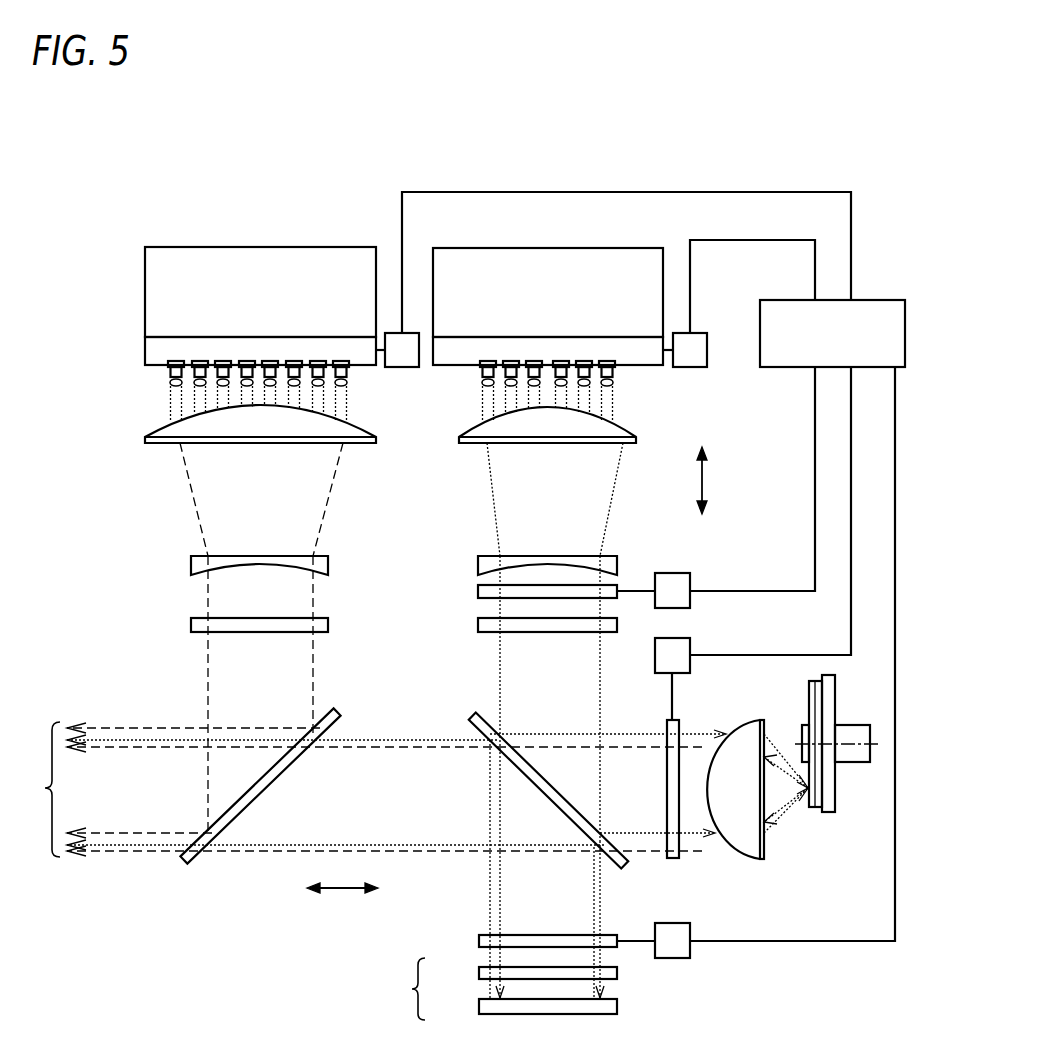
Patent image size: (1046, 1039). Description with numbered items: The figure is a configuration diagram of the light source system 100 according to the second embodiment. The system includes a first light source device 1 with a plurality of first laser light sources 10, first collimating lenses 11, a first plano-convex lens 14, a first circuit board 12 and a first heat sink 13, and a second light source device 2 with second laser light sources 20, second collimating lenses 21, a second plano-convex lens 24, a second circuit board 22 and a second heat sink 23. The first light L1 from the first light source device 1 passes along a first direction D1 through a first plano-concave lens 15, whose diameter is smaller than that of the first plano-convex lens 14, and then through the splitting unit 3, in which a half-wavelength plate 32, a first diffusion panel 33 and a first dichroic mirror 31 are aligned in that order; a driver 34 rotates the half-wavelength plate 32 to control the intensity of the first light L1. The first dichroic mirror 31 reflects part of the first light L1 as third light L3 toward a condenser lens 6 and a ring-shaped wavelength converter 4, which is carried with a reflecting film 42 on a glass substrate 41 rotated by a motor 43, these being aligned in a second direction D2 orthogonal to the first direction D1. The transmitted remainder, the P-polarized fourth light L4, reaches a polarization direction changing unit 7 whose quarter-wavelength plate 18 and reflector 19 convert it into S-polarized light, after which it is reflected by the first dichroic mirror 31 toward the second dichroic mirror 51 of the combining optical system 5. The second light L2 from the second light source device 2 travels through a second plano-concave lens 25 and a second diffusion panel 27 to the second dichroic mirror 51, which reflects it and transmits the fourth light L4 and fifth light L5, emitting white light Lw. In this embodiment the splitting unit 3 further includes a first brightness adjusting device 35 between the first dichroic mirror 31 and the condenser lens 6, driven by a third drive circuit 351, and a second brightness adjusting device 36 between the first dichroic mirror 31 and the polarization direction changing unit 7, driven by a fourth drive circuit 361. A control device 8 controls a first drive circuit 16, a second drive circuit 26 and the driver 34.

The light source system 100 is at (277, 136).
The first light source device 1 is at (559, 344).
The second light source device 2 is at (243, 340).
The splitting unit 3 is at (546, 774).
The wavelength converter 4 is at (829, 760).
The combining optical system 5 is at (269, 787).
The condenser lens 6 is at (741, 729).
The polarization direction changing unit 7 is at (506, 988).
The control device 8 is at (785, 368).
The first laser light sources 10 is at (487, 360).
The first collimating lenses 11 is at (486, 388).
The first circuit board 12 is at (648, 367).
The first heat sink 13 is at (497, 255).
The first plano-convex lens 14 is at (617, 440).
The first plano-concave lens 15 is at (610, 559).
The first drive circuit 16 is at (700, 340).
The quarter-wavelength plate 18 is at (479, 975).
The reflector 19 is at (479, 1003).
The second laser light sources 20 is at (176, 360).
The second collimating lenses 21 is at (176, 388).
The second circuit board 22 is at (147, 344).
The second heat sink 23 is at (207, 255).
The second plano-convex lens 24 is at (289, 430).
The second plano-concave lens 25 is at (328, 567).
The second drive circuit 26 is at (405, 368).
The second diffusion panel 27 is at (328, 625).
The first dichroic mirror 31 is at (470, 710).
The half-wavelength plate 32 is at (478, 592).
The first diffusion panel 33 is at (478, 623).
The driver 34 is at (680, 573).
The first brightness adjusting device 35 is at (680, 856).
The third drive circuit 351 is at (688, 645).
The second brightness adjusting device 36 is at (478, 937).
The fourth drive circuit 361 is at (675, 958).
The glass substrate 41 is at (835, 806).
The reflecting film 42 is at (815, 808).
The motor 43 is at (853, 763).
The second dichroic mirror 51 is at (332, 709).
The first light L1 is at (492, 488).
The second light L2 is at (340, 485).
The third light L3 is at (630, 732).
The fourth light L4 is at (385, 845).
The fifth light L5 is at (140, 856).
The white light Lw is at (34, 789).
The first direction D1 is at (718, 480).
The second direction D2 is at (342, 906).